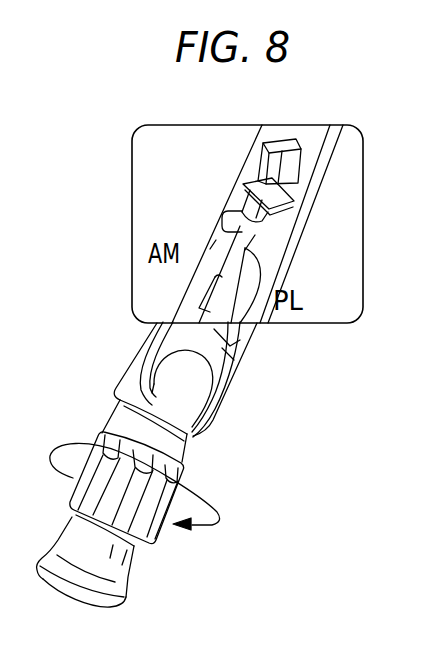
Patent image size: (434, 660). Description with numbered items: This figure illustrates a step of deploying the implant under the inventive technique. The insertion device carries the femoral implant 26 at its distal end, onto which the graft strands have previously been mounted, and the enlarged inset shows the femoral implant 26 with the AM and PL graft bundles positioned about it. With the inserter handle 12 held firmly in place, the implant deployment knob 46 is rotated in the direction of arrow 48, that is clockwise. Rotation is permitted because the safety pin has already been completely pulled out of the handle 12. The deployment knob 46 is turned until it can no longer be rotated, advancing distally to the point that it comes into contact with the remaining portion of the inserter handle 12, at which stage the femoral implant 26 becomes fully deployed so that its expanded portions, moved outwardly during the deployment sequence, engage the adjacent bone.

The femoral implant 26 is at (293, 196).
The handle portion 12 is at (230, 398).
The deployment knob 46 is at (107, 435).
The arrow 48 is at (217, 511).